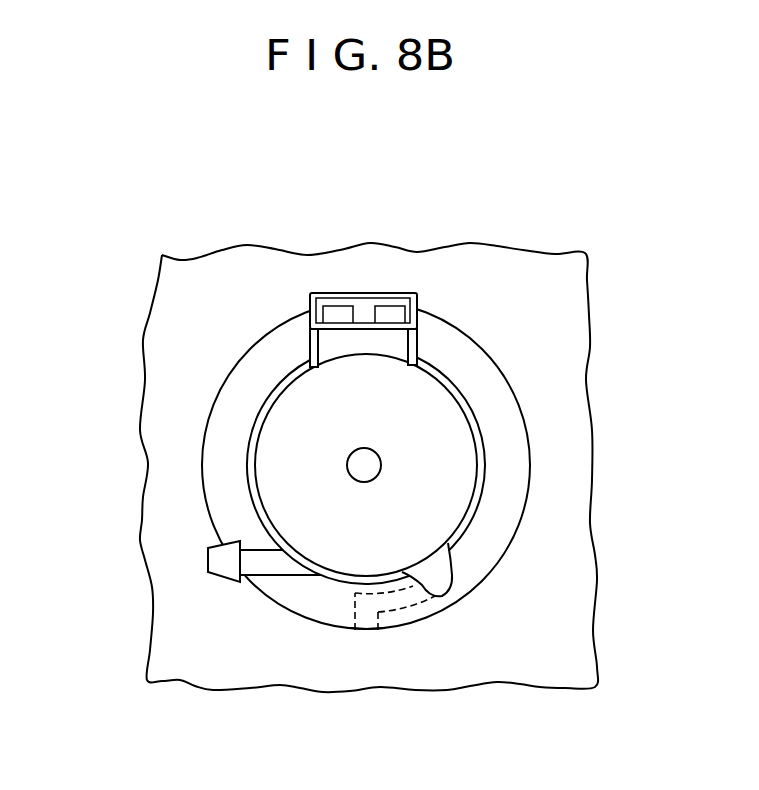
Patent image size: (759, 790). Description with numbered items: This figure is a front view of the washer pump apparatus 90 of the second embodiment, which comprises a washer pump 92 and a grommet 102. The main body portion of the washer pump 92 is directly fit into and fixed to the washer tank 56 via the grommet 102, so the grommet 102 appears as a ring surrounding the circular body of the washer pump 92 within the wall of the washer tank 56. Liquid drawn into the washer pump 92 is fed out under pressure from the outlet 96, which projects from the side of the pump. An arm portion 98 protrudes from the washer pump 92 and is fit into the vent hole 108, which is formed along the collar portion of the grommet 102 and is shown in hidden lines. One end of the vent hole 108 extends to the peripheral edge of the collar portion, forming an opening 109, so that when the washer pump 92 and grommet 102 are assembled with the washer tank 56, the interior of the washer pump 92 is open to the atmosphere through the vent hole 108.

The washer tank 56 is at (542, 303).
The washer pump apparatus 90 is at (418, 457).
The washer pump 92 is at (454, 538).
The outlet 96 is at (208, 563).
The arm portion 98 is at (448, 592).
The grommet 102 is at (525, 406).
The vent hole 108 is at (398, 603).
The opening 109 is at (367, 630).